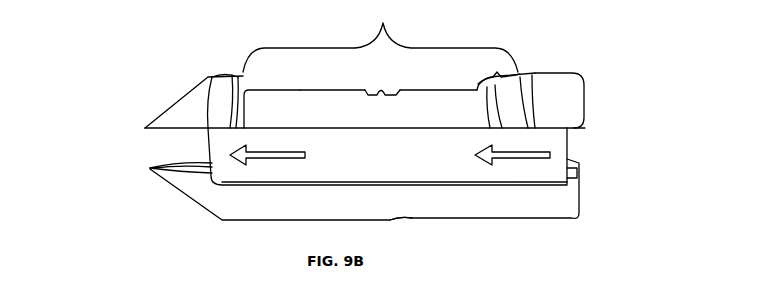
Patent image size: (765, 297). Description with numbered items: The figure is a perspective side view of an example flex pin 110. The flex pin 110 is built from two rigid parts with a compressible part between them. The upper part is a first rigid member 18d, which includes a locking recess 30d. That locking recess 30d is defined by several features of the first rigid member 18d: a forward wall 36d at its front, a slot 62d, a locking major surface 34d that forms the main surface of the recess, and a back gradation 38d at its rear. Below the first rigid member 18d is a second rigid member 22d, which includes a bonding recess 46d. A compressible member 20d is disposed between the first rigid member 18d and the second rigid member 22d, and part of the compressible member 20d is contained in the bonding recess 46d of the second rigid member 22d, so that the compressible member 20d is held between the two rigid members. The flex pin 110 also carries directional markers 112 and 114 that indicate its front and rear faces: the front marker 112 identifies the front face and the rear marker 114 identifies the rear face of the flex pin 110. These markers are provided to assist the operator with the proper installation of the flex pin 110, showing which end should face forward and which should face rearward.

The first rigid member 18d is at (598, 105).
The compressible member 20d is at (463, 159).
The second rigid member 22d is at (581, 190).
The locking recess 30d is at (380, 39).
The locking major surface 34d is at (452, 90).
The forward wall 36d is at (246, 80).
The back gradation 38d is at (498, 91).
The bonding recess 46d is at (223, 182).
The slot 62d is at (248, 90).
The flex pin 110 is at (125, 142).
The directional marker 112 is at (383, 89).
The directional marker 114 is at (425, 220).